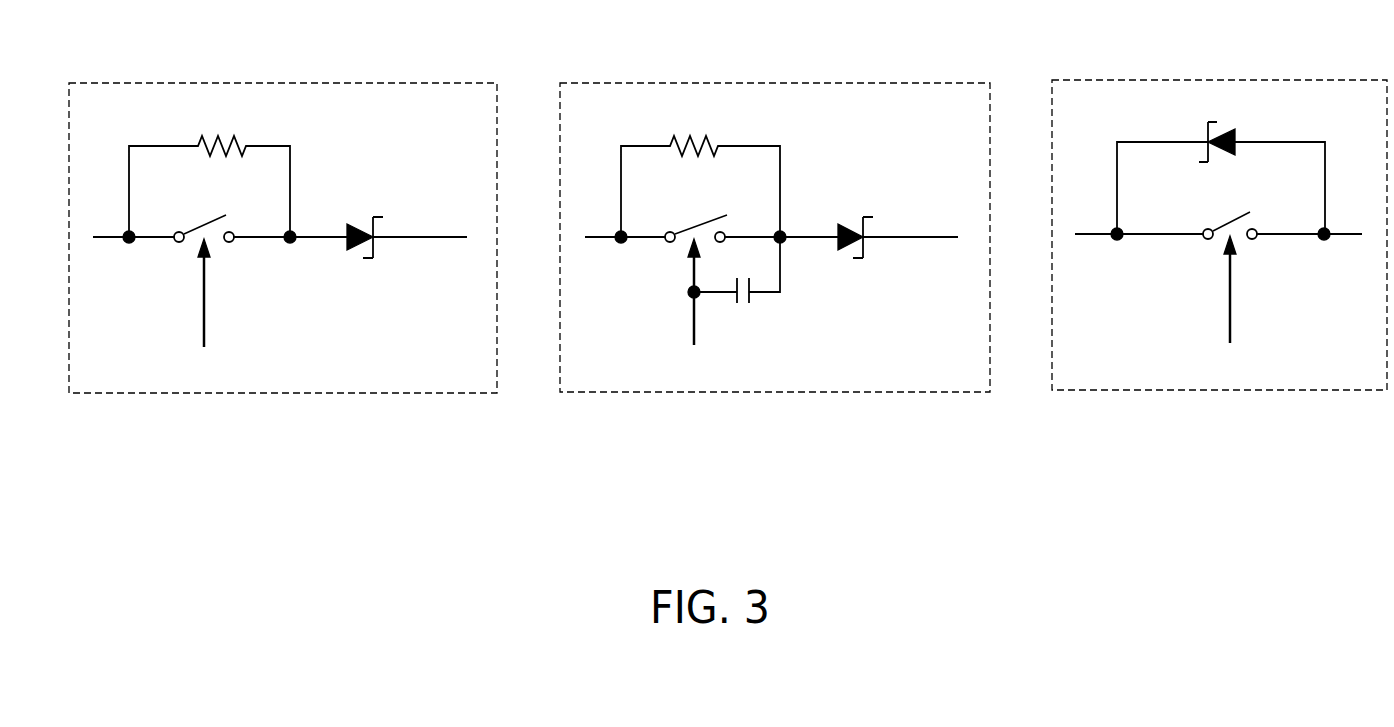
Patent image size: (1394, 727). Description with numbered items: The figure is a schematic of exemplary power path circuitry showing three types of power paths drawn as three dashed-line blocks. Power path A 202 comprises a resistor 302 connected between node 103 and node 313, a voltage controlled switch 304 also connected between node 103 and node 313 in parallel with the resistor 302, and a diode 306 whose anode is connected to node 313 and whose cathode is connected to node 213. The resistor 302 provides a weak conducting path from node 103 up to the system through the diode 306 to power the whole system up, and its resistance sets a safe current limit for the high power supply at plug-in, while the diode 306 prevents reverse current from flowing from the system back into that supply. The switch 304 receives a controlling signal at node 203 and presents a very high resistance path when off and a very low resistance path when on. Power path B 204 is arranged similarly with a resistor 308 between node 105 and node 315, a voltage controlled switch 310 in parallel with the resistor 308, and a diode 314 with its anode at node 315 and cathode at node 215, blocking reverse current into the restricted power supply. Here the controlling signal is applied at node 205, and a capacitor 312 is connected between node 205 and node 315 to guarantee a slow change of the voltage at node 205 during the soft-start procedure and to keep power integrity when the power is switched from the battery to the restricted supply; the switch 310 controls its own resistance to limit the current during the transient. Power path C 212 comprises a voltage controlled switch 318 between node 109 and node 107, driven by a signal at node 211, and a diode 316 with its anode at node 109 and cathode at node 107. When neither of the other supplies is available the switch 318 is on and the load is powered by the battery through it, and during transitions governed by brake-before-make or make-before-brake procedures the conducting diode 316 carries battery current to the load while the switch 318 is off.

The power path A 202 is at (217, 72).
The resistor 302 is at (245, 141).
The voltage controlled switch 304 is at (203, 222).
The node 313 is at (293, 232).
The diode 306 is at (382, 224).
The node 103 is at (112, 238).
The node 203 is at (204, 332).
The node 213 is at (450, 239).
The power path B 204 is at (707, 72).
The resistor 308 is at (718, 141).
The voltage controlled switch 310 is at (692, 222).
The node 315 is at (783, 232).
The diode 314 is at (872, 224).
The node 105 is at (593, 240).
The node 205 is at (694, 332).
The capacitor 312 is at (752, 297).
The node 215 is at (947, 239).
The power path C 212 is at (1199, 68).
The diode 316 is at (1236, 136).
The voltage controlled switch 318 is at (1225, 215).
The node 109 is at (1090, 237).
The node 211 is at (1230, 330).
The node 107 is at (1345, 238).